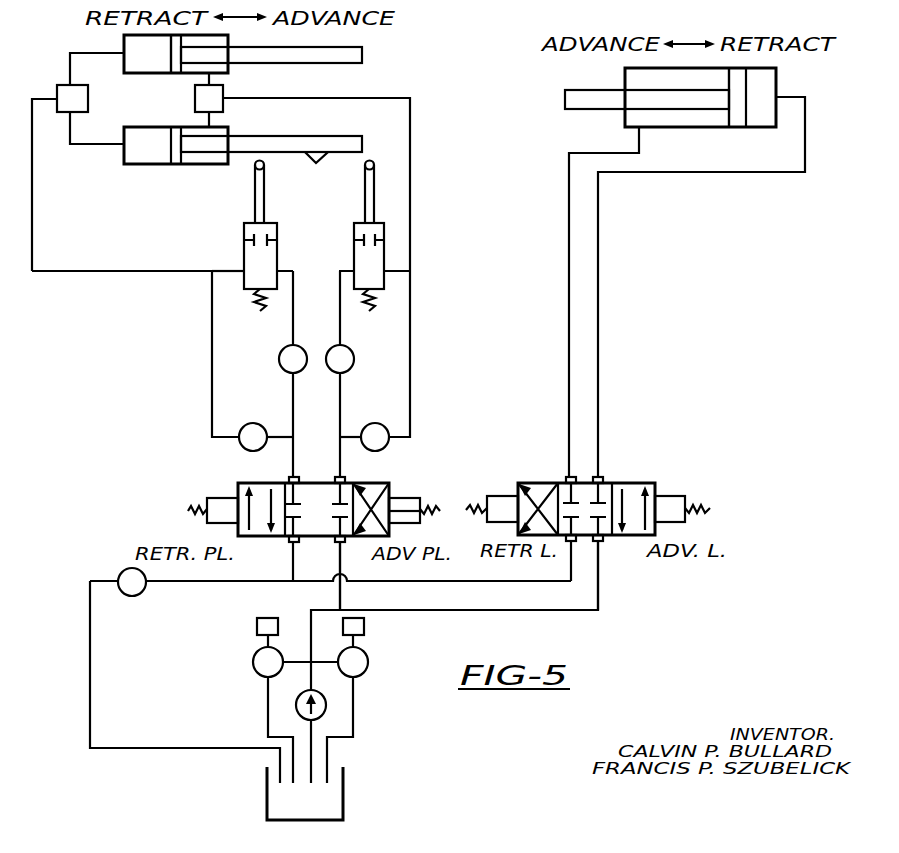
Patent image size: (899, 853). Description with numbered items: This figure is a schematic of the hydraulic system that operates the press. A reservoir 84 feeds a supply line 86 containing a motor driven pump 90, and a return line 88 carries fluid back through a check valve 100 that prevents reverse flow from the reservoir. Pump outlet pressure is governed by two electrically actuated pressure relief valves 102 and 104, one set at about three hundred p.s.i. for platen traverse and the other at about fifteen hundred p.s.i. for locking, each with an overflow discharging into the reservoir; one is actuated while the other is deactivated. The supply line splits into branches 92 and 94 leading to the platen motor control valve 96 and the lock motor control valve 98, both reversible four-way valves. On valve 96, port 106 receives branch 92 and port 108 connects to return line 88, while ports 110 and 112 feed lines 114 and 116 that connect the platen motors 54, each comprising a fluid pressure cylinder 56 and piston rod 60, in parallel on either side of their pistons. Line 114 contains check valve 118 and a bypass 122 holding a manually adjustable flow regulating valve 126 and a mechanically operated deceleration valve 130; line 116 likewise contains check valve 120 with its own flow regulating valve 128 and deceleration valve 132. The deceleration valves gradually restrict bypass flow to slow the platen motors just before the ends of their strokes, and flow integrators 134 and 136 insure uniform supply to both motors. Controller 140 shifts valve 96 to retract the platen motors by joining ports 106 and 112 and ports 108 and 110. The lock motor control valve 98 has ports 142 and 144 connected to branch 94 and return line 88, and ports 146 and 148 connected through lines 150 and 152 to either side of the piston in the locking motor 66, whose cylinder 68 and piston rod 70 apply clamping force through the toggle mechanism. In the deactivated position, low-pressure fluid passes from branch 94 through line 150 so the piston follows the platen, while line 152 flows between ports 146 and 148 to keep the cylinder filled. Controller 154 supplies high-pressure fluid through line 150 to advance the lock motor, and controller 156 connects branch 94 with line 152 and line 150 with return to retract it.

The platen motors 54 is at (132, 35).
The fluid pressure cylinder 56 is at (160, 74).
The piston rod 60 is at (359, 48).
The locking motor 66 is at (722, 130).
The cylinder 68 is at (665, 128).
The piston rod 70 is at (598, 89).
The reservoir 84 is at (266, 803).
The supply line 86 is at (312, 677).
The return line 88 is at (478, 582).
The motor driven pump 90 is at (320, 713).
The branch 92 is at (340, 600).
The branch 94 is at (452, 611).
The platen motor control valve 96 is at (397, 483).
The lock motor control valve 98 is at (543, 479).
The check valve 100 is at (140, 593).
The pressure relief valve 102 is at (256, 670).
The pressure relief valve 104 is at (368, 662).
The port 106 is at (343, 543).
The port 108 is at (291, 543).
The port 110 is at (289, 478).
The port 112 is at (345, 482).
The line 114 is at (145, 274).
The line 116 is at (411, 200).
The check valve 118 is at (243, 447).
The check valve 120 is at (383, 446).
The bypass 122 is at (226, 273).
The flow regulating valve 126 is at (284, 368).
The flow regulating valve 128 is at (349, 368).
The deceleration valve 130 is at (244, 262).
The deceleration valve 132 is at (354, 262).
The flow integrator 134 is at (69, 85).
The flow integrator 136 is at (223, 97).
The electrical controller 140 is at (230, 497).
The port 142 is at (601, 543).
The port 144 is at (570, 543).
The port 146 is at (600, 477).
The port 148 is at (568, 477).
The line 150 is at (599, 325).
The line 152 is at (568, 303).
The electrical controller 154 is at (665, 496).
The electrical controller 156 is at (518, 496).